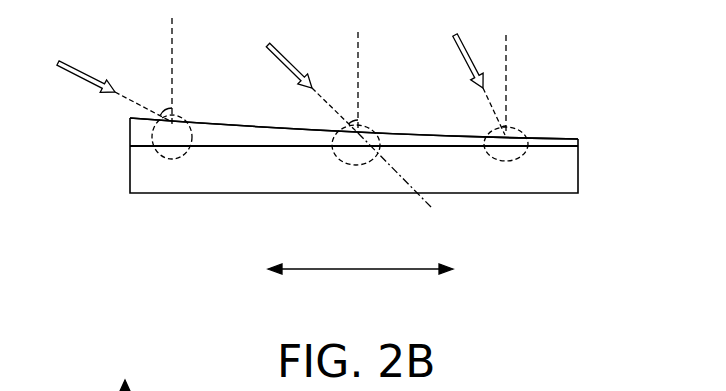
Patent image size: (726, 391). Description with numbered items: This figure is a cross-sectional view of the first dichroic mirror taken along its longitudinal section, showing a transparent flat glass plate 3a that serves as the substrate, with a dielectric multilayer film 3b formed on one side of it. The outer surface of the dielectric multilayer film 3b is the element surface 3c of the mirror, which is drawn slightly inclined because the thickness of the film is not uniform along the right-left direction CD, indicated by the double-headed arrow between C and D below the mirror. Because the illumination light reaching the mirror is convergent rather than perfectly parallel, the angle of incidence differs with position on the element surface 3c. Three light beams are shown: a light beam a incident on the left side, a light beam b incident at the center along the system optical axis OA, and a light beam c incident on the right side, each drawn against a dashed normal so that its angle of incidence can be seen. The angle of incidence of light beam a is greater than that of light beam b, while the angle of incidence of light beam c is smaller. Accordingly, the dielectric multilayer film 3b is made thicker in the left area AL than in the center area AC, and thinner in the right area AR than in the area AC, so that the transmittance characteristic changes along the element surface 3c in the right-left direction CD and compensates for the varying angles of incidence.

The flat glass plate 3a is at (130, 168).
The dielectric multilayer film 3b is at (130, 132).
The element surface 3c is at (263, 125).
The light beam a is at (58, 67).
The light beam b is at (268, 50).
The light beam c is at (453, 44).
The system optical axis OA is at (408, 188).
The area AL is at (168, 158).
The area AC is at (340, 162).
The area AR is at (515, 160).
The right-left direction C is at (355, 288).
The right-left direction D is at (450, 300).